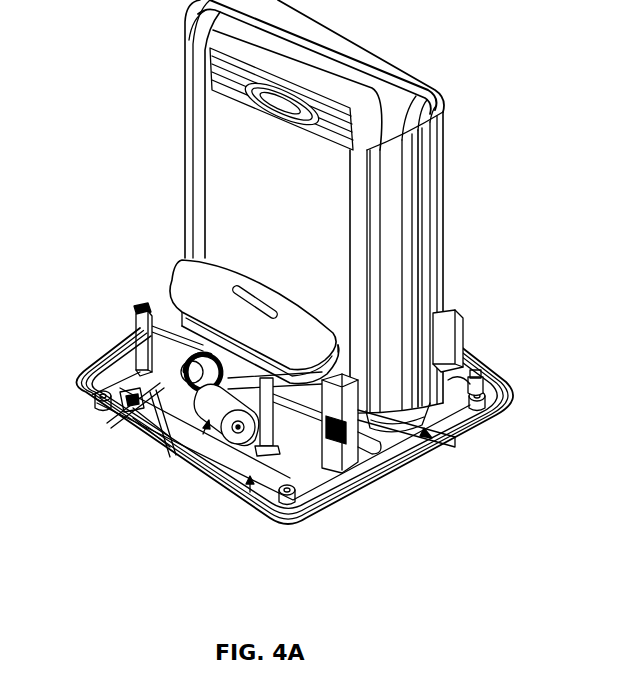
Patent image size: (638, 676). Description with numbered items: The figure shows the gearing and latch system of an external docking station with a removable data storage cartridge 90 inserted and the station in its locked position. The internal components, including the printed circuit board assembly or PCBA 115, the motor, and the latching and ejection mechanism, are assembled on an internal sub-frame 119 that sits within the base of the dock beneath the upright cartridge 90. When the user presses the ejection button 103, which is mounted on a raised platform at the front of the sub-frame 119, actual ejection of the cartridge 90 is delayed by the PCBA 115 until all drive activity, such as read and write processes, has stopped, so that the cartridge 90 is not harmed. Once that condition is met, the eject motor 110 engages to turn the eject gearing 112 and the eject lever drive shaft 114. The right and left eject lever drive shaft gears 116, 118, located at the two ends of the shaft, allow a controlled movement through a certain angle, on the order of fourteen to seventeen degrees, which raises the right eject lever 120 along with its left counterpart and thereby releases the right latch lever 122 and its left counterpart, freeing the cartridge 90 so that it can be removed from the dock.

The removable data storage cartridge 90 is at (436, 165).
The ejection button 103 is at (190, 282).
The eject motor 110 is at (190, 477).
The eject gearing 112 is at (122, 440).
The eject lever drive shaft 114 is at (307, 480).
The PCBA 115 is at (242, 505).
The right eject lever drive shaft gear 116 is at (370, 480).
The left eject lever drive shaft gear 118 is at (136, 309).
The internal sub-frame 119 is at (136, 333).
The right eject lever 120 is at (453, 450).
The right latch lever 122 is at (460, 365).